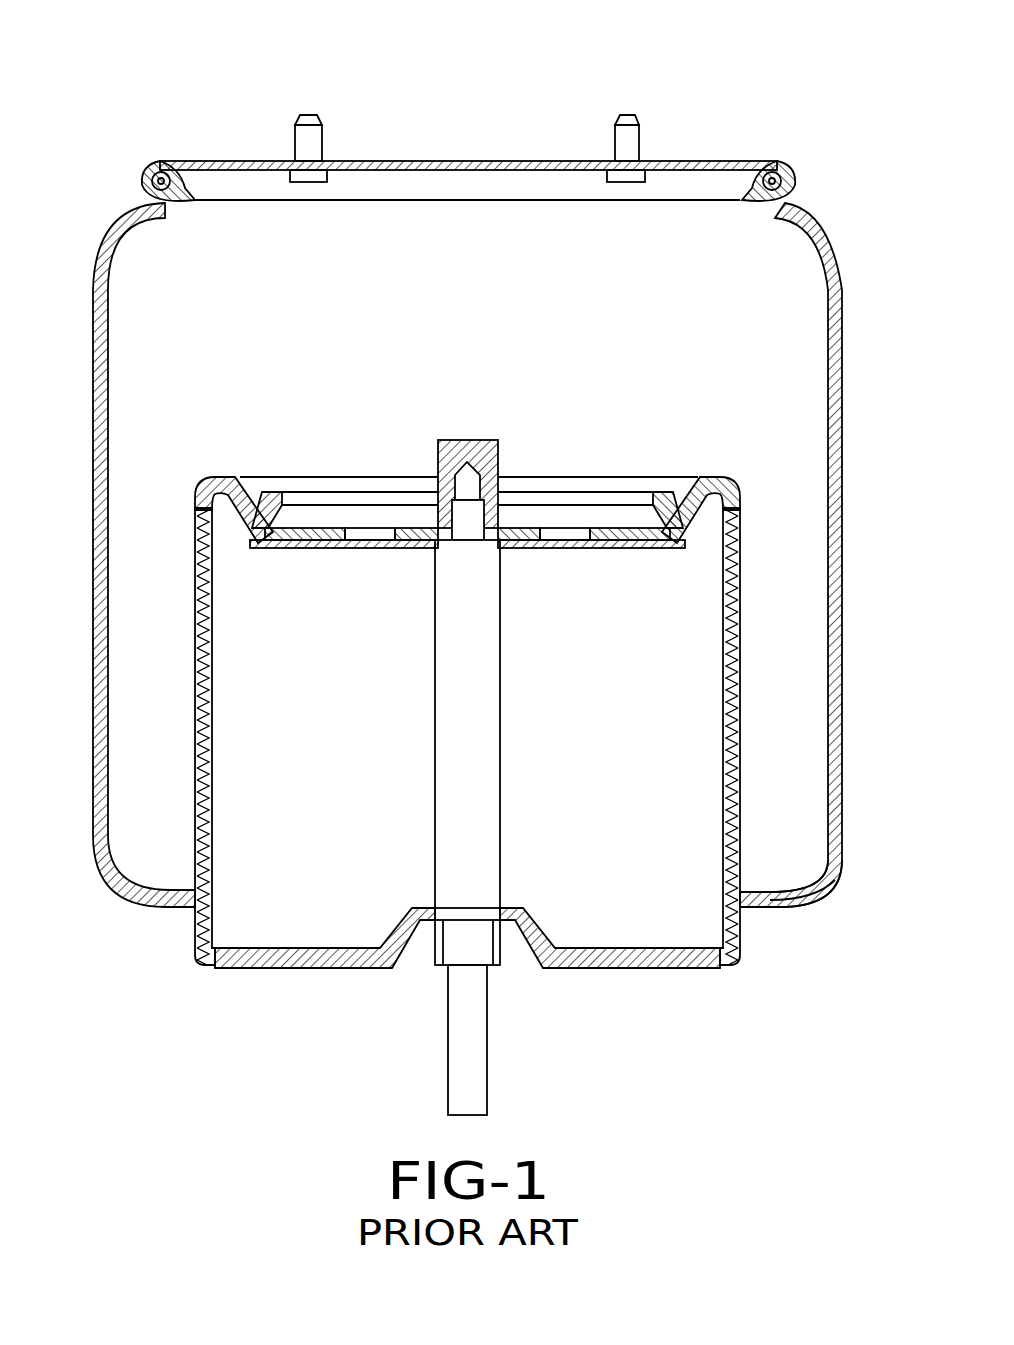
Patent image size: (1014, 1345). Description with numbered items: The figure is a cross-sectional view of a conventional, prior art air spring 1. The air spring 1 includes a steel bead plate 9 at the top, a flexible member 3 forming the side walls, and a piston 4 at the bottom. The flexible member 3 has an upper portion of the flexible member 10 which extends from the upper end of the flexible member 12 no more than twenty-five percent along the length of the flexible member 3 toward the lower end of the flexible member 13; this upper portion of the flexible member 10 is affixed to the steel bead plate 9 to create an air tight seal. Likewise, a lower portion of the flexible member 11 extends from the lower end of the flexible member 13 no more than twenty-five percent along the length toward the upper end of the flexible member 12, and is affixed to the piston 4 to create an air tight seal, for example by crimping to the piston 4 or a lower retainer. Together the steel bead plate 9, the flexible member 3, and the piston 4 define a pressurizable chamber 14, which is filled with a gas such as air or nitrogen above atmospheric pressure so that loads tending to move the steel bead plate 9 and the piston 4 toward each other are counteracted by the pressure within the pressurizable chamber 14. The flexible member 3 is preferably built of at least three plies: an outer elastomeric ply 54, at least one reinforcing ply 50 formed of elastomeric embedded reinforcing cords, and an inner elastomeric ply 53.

The air spring 1 is at (92, 130).
The flexible member 3 is at (841, 400).
The piston 4 is at (613, 760).
The steel bead plate 9 is at (405, 162).
The upper portion of the flexible member 10 is at (762, 175).
The lower portion of the flexible member 11 is at (668, 510).
The upper end of the flexible member 12 is at (778, 185).
The lower end of the flexible member 13 is at (660, 545).
The pressurizable chamber 14 is at (640, 347).
The reinforcing ply 50 is at (805, 888).
The inner elastomeric ply 53 is at (800, 885).
The outer elastomeric ply 54 is at (783, 900).